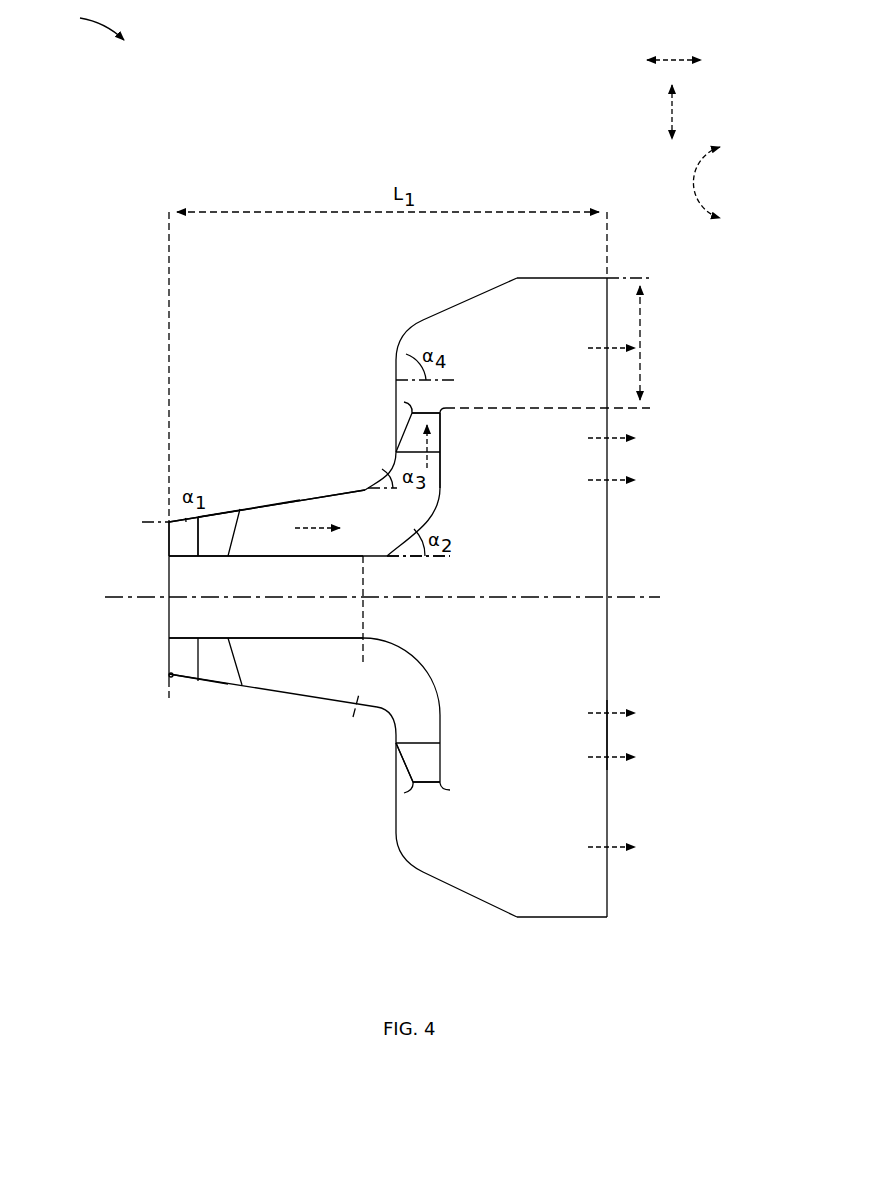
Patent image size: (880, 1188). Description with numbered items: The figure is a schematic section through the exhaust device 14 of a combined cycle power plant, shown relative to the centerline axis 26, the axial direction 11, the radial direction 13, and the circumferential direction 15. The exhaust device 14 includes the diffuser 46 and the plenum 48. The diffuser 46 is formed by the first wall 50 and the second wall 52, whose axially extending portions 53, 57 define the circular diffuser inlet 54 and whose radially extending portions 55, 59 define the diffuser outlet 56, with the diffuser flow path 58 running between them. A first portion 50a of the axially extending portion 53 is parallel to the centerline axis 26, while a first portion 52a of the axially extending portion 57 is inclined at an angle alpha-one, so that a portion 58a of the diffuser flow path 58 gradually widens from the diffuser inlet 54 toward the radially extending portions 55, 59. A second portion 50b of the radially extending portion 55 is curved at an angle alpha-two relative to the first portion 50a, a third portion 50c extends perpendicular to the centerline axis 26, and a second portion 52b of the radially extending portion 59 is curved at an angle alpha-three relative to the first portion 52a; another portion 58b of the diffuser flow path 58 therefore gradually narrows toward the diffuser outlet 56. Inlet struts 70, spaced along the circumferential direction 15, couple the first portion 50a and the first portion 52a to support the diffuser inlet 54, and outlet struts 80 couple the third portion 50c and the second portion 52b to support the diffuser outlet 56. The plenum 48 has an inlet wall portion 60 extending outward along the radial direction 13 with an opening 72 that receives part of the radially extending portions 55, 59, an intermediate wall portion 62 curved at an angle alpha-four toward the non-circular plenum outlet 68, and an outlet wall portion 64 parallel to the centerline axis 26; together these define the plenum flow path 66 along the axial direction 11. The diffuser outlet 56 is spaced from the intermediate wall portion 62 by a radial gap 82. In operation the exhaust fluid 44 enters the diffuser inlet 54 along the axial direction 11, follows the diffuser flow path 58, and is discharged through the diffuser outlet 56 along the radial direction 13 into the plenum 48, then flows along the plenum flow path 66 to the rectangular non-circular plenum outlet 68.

The exhaust device 14 is at (84, 22).
The axial direction 11 is at (672, 56).
The radial direction 13 is at (669, 115).
The circumferential direction 15 is at (697, 150).
The centerline axis 26 is at (643, 597).
The exhaust fluid 44 is at (312, 532).
The diffuser 46 is at (192, 686).
The plenum 48 is at (594, 930).
The first wall 50 is at (286, 634).
The first portion of the axially extending portion of the first wall 50a is at (245, 560).
The second portion of the radially extending portion of the first wall 50b is at (390, 558).
The third portion of the radially extending portion of the first wall 50c is at (443, 461).
The second wall 52 is at (246, 692).
The first portion of the axially extending portion of the second wall 52a is at (272, 500).
The second portion of the radially extending portion of the second wall 52b is at (392, 470).
The axially extending portion of the first wall 53 is at (248, 637).
The diffuser inlet 54 is at (178, 540).
The radially extending portion of the first wall 55 is at (415, 656).
The diffuser outlet 56 is at (430, 405).
The axially extending portion of the second wall 57 is at (312, 708).
The diffuser flow path 58 is at (311, 508).
The portion of the diffuser flow path 58a is at (262, 507).
The another portion of the diffuser flow path 58b is at (425, 493).
The radially extending portion of the second wall 59 is at (384, 711).
The inlet wall portion 60 is at (395, 414).
The intermediate wall portion 62 is at (408, 326).
The outlet wall portion 64 is at (555, 277).
The plenum flow path 66 is at (553, 652).
The non-circular plenum outlet 68 is at (608, 730).
The inlet struts 70 is at (210, 543).
The opening 72 is at (392, 750).
The outlet struts 80 is at (445, 430).
The radial gap 82 is at (647, 322).